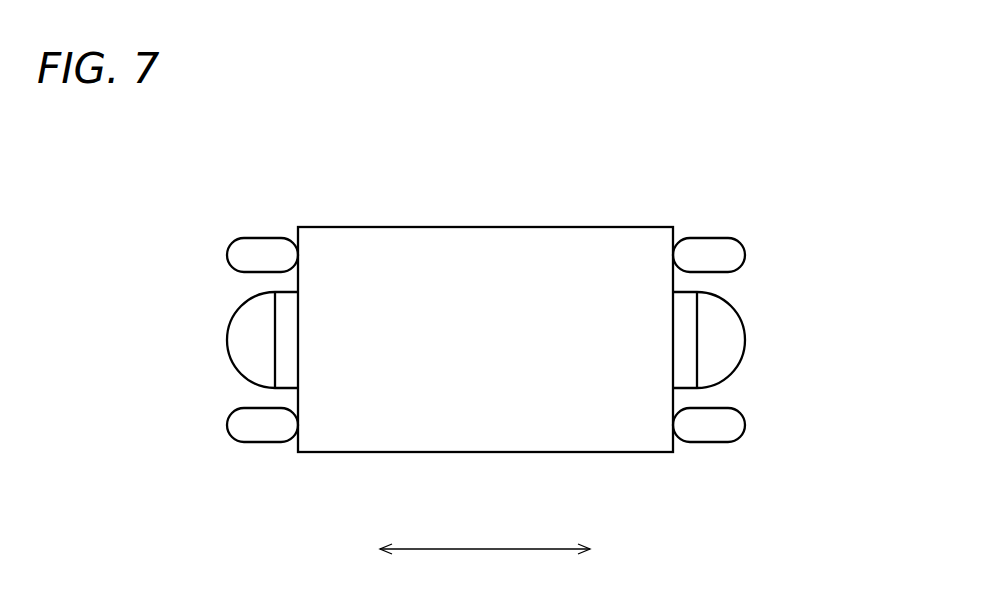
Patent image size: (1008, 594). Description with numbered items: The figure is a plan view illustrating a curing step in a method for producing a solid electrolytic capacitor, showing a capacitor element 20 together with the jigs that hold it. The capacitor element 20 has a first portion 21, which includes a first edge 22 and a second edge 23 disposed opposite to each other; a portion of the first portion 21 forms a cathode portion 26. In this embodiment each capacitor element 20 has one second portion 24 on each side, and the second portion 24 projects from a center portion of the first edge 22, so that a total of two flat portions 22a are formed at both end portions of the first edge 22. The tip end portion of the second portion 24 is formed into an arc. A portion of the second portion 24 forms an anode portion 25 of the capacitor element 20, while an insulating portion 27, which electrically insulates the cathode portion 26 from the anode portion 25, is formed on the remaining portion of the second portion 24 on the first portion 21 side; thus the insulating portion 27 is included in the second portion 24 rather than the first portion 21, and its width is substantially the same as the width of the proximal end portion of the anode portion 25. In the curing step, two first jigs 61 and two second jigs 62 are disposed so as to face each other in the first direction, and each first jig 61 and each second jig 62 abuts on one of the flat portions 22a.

The capacitor element 20 is at (437, 226).
The first portion 21 is at (515, 253).
The cathode portion 26 is at (485, 339).
The first edge 22 is at (675, 403).
The second edge 23 is at (297, 403).
The flat portion 22a is at (288, 252).
The second portion 24 is at (243, 324).
The anode portion 25 is at (243, 337).
The insulating portion 27 is at (289, 338).
The first jig 61 is at (238, 255).
The second jig 62 is at (735, 255).